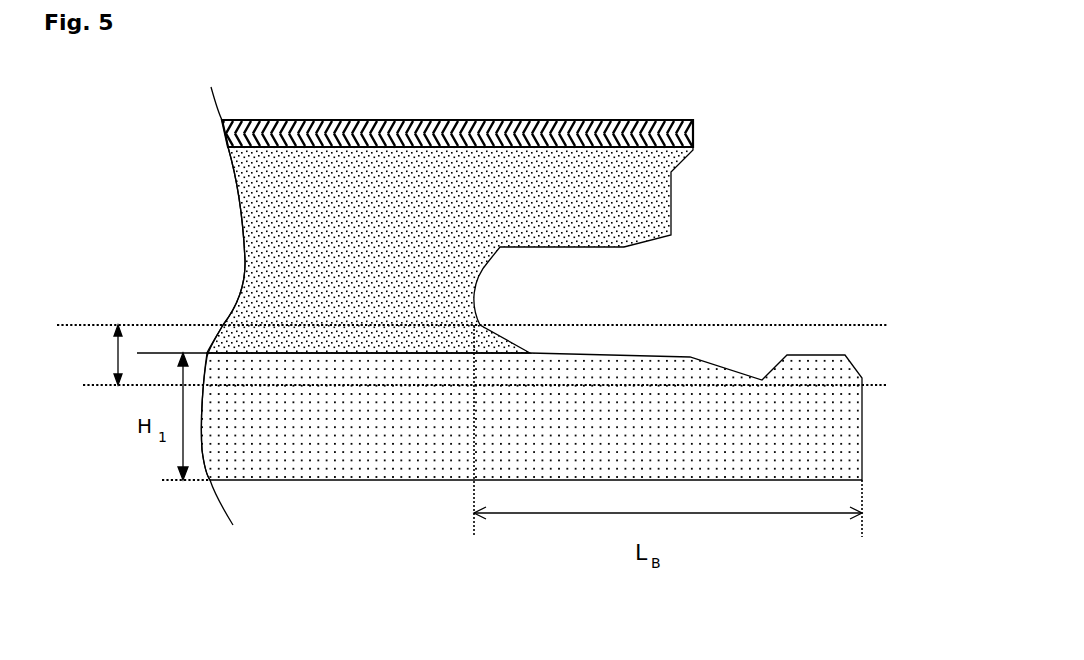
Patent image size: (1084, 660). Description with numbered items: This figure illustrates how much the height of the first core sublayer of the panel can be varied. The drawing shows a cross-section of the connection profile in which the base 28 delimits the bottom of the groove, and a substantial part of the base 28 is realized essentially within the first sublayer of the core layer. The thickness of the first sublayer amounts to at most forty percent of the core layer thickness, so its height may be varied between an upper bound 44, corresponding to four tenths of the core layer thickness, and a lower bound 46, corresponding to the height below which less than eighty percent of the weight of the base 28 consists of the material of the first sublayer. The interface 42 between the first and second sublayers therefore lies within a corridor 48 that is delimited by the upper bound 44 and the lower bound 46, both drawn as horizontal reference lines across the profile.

The base 28 is at (817, 447).
The interface 42 is at (257, 355).
The upper bound 44 is at (737, 325).
The lower bound 46 is at (875, 385).
The corridor 48 is at (118, 357).